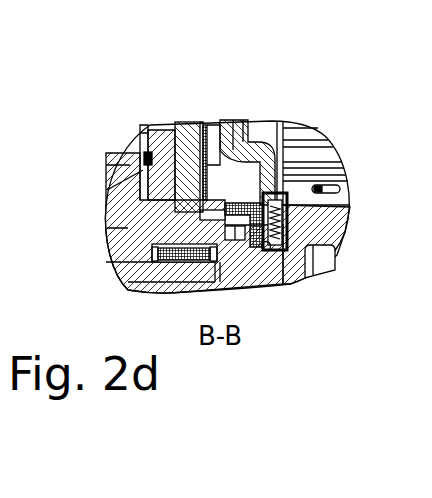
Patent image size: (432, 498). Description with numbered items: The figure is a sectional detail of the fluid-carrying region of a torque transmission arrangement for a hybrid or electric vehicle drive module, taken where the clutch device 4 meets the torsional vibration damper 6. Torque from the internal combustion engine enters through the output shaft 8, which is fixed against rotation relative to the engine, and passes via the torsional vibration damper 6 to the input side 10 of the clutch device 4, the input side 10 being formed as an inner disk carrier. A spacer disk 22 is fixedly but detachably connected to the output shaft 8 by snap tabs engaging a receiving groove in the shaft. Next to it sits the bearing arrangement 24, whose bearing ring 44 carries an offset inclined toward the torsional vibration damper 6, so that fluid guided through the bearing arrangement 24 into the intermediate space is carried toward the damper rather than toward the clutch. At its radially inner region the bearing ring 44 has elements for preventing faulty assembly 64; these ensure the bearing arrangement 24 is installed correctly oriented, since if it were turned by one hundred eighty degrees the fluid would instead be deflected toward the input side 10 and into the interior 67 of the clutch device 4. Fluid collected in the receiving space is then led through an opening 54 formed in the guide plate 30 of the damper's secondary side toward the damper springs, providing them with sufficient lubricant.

The clutch device 4 is at (318, 150).
The torsional vibration damper 6 is at (168, 125).
The output shaft 8 is at (157, 222).
The input side 10 is at (247, 134).
The spacer disk 22 is at (205, 205).
The bearing arrangement 24 is at (276, 227).
The guide plate 30 is at (218, 128).
The bearing ring 44 is at (285, 211).
The opening 54 is at (207, 128).
The elements for preventing faulty assembly 64 is at (266, 250).
The interior 67 is at (320, 167).